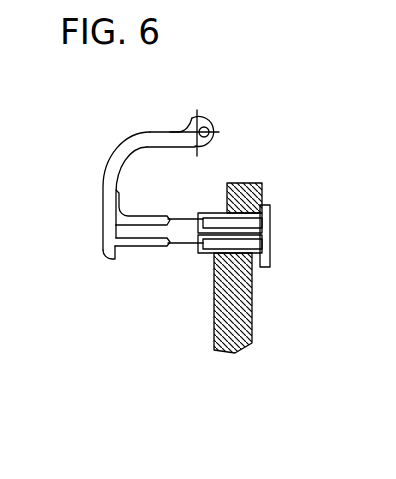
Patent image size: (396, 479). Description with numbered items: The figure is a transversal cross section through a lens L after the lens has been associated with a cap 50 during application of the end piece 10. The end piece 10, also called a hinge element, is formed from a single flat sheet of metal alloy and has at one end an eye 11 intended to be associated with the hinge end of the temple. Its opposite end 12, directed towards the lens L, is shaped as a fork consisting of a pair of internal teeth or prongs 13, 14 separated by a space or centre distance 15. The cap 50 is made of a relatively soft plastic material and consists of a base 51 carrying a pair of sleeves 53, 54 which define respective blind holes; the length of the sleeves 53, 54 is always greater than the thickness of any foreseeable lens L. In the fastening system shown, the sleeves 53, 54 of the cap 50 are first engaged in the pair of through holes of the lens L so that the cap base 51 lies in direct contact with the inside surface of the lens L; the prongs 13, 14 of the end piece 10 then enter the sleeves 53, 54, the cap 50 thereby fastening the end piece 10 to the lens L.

The end piece 10 is at (118, 140).
The eye 11 is at (193, 119).
The opposite end 12 is at (98, 253).
The prong 13 is at (116, 196).
The prong 14 is at (117, 260).
The centre distance 15 is at (158, 231).
The cap 50 is at (263, 268).
The base 51 is at (265, 199).
The sleeve 53 is at (208, 212).
The sleeve 54 is at (200, 258).
The lens L is at (223, 345).